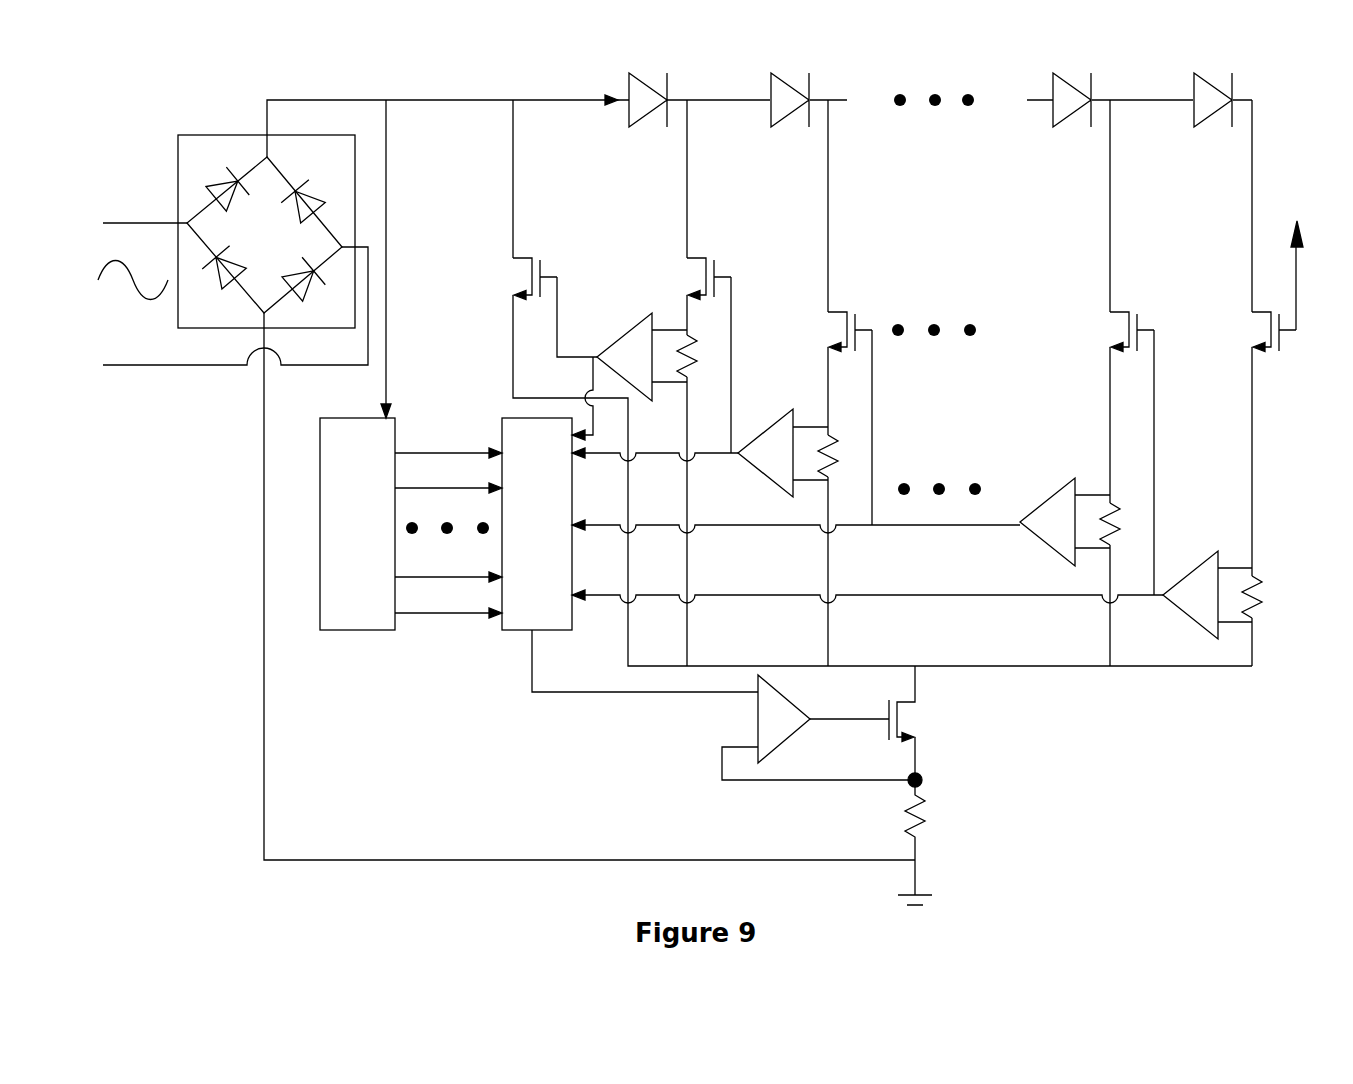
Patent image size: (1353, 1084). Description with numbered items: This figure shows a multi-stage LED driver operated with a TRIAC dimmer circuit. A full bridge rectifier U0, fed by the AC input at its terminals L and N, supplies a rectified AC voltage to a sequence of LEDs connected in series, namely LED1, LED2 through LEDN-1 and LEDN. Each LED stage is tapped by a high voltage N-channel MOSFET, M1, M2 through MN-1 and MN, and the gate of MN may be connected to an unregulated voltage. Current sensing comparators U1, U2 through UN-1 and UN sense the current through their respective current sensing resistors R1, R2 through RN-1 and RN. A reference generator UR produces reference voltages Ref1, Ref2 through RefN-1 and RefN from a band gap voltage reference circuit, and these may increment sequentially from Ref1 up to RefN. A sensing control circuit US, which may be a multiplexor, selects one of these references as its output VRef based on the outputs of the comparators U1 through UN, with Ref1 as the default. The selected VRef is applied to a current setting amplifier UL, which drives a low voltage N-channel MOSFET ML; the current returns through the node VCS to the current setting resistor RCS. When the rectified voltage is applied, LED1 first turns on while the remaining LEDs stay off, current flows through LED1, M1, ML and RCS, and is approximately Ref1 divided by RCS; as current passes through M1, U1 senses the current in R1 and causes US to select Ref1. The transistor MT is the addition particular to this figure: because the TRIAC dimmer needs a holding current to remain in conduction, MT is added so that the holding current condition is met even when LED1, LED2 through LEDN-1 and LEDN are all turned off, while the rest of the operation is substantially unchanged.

The full bridge rectifier U0 is at (266, 215).
The AC line terminal L is at (142, 241).
The AC neutral terminal N is at (235, 306).
The first LED LED1 is at (641, 124).
The second LED LED2 is at (783, 124).
The (N-1)th LED LEDN-1 is at (1063, 124).
The Nth LED LEDN is at (1208, 124).
The transistor MT is at (512, 279).
The first high voltage N-channel MOSFET M1 is at (687, 279).
The second high voltage N-channel MOSFET M2 is at (828, 332).
The (N-1)th high voltage N-channel MOSFET MN-1 is at (1099, 332).
The Nth high voltage N-channel MOSFET MN is at (1251, 332).
The first current sensing comparator U1 is at (639, 357).
The second current sensing comparator U2 is at (780, 454).
The (N-1)th current sensing comparator UN-1 is at (1054, 523).
The Nth current sensing comparator UN is at (1205, 599).
The first current sensing resistor R1 is at (700, 346).
The second current sensing resistor R2 is at (841, 446).
The (N-1)th current sensing resistor RN-1 is at (1087, 493).
The Nth current sensing resistor RN is at (1273, 597).
The reference voltage generator UR is at (357, 524).
The sensing control circuit US is at (537, 524).
The first reference voltage Ref1 is at (448, 441).
The second reference voltage Ref2 is at (448, 477).
The (N-1)th reference voltage RefN-1 is at (448, 595).
The Nth reference voltage RefN is at (448, 631).
The default reference voltage VRef is at (713, 718).
The current setting amplifier UL is at (818, 727).
The low voltage N-channel MOSFET ML is at (922, 723).
The current sense voltage node VCS is at (941, 777).
The current setting resistor RCS is at (941, 842).